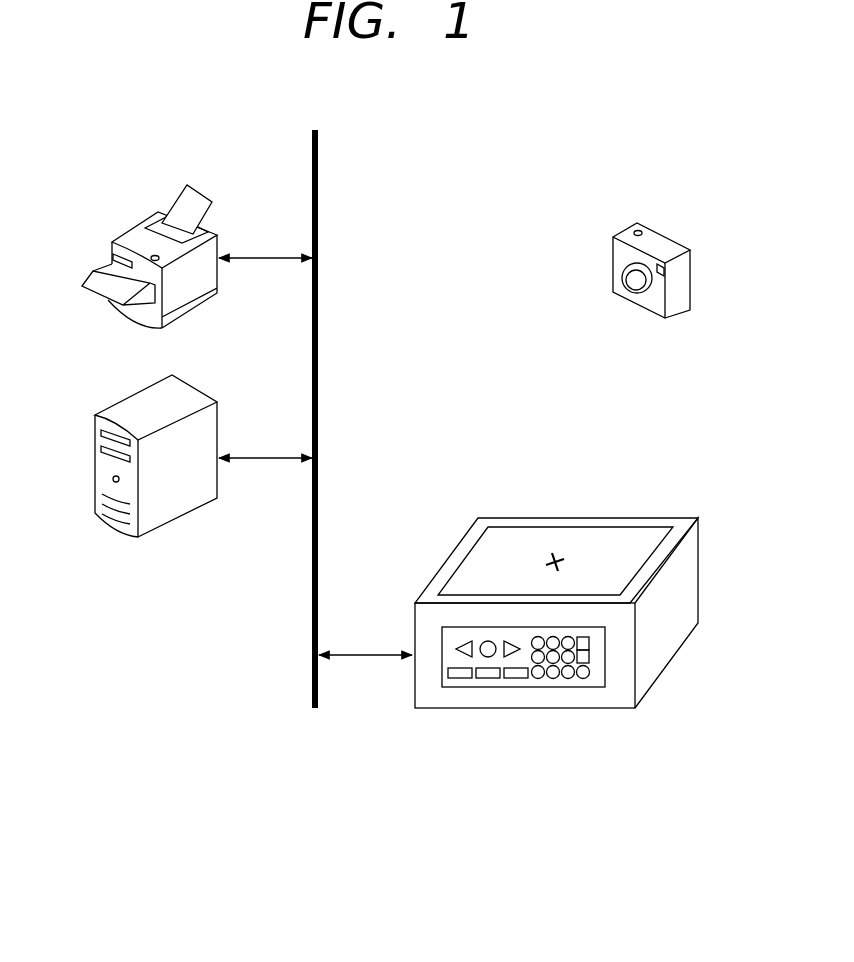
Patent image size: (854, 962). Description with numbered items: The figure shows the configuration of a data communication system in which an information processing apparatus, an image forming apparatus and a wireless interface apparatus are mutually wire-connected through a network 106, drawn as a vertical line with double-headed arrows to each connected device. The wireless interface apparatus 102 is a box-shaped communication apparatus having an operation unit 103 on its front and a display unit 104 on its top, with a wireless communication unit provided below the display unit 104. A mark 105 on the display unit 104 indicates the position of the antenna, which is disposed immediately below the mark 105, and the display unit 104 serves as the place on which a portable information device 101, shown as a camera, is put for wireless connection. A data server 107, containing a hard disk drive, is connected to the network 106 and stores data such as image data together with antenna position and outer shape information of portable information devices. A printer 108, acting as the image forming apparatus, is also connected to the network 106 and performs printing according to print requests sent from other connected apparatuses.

The portable information device 101 is at (612, 267).
The wireless interface apparatus 102 is at (565, 608).
The operation unit 103 is at (527, 688).
The display unit 104 is at (617, 542).
The mark 105 is at (553, 556).
The network 106 is at (320, 176).
The data server 107 is at (94, 452).
The printer 108 is at (109, 252).